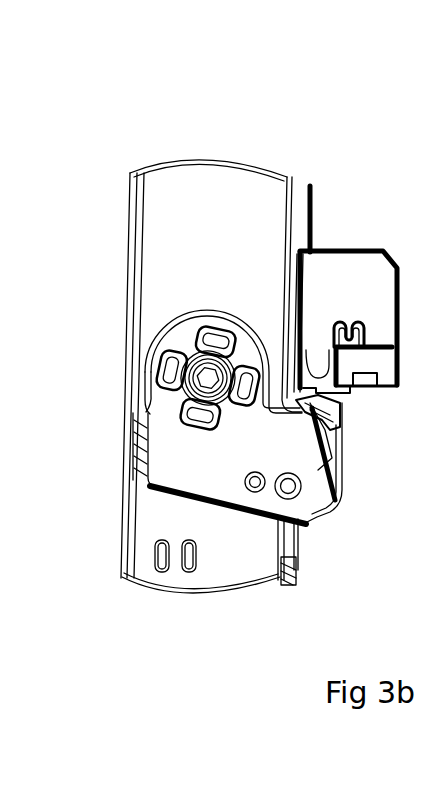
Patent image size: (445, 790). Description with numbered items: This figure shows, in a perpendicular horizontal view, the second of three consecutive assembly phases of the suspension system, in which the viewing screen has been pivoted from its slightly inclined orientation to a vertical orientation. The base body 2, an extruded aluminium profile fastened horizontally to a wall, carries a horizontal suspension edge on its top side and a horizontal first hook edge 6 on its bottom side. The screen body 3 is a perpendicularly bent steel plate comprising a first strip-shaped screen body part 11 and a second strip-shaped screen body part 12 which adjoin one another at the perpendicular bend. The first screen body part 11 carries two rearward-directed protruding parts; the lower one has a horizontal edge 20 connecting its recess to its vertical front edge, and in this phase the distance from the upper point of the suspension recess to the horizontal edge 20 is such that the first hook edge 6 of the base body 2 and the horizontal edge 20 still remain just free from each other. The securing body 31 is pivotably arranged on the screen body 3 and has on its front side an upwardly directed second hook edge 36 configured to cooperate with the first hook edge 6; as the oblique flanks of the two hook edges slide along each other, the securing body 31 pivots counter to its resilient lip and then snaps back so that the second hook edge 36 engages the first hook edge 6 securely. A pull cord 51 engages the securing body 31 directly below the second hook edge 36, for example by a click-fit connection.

The screen body 3 is at (248, 118).
The first strip-shaped screen body part 11 is at (228, 243).
The second strip-shaped screen body part 12 is at (127, 275).
The base body 2 is at (349, 305).
The securing body 31 is at (229, 473).
The first hook edge 6 is at (320, 393).
The horizontal edge 20 is at (343, 420).
The second hook edge 36 is at (325, 456).
The pull cord 51 is at (300, 542).